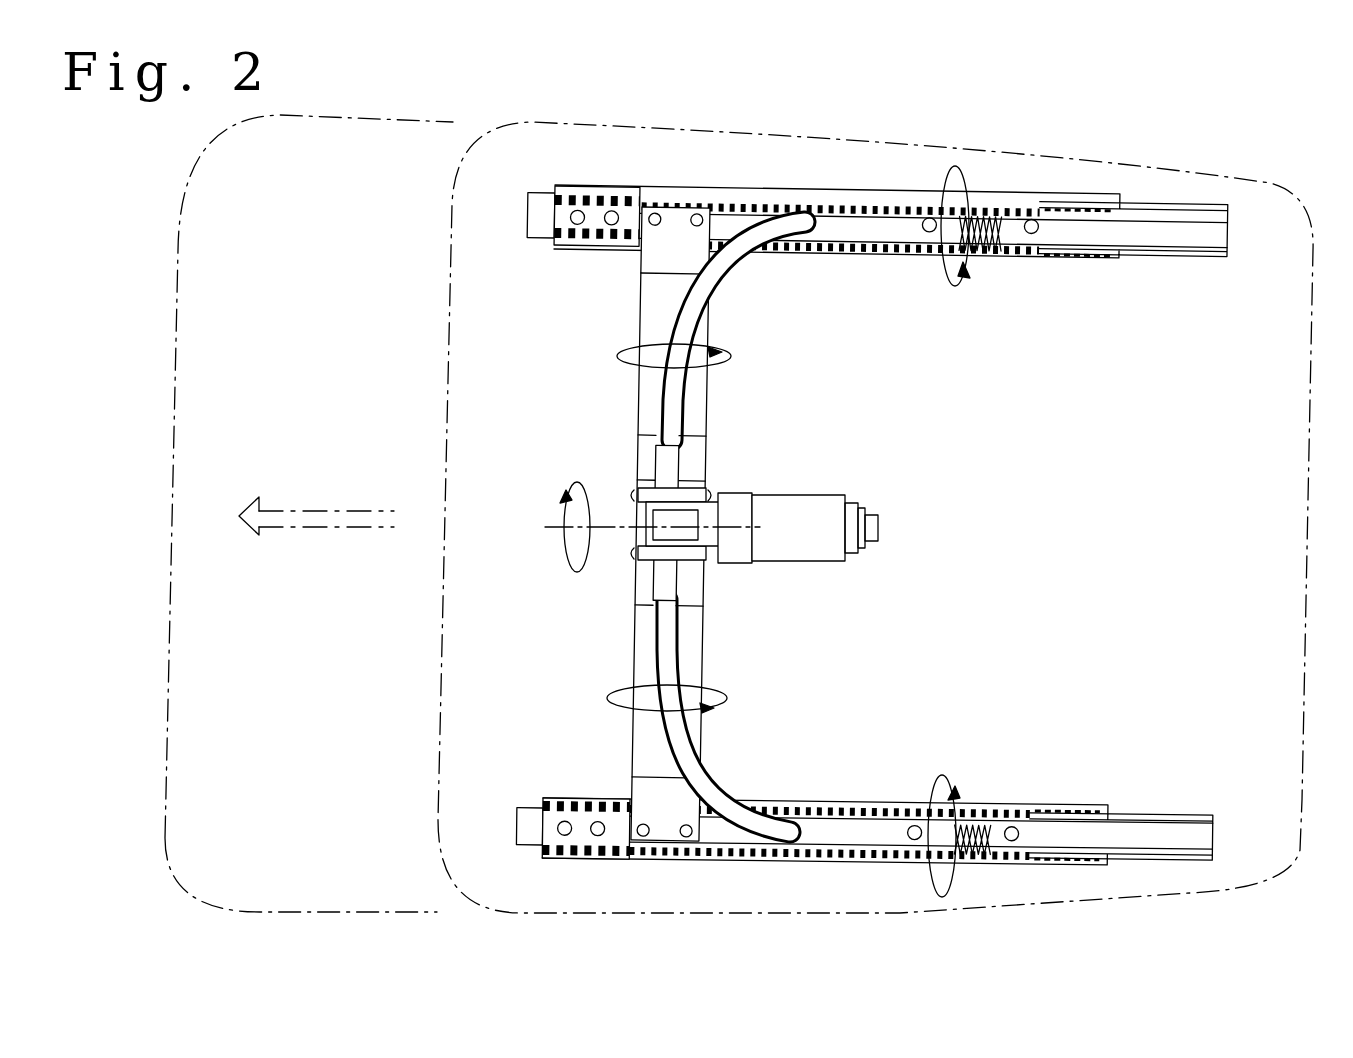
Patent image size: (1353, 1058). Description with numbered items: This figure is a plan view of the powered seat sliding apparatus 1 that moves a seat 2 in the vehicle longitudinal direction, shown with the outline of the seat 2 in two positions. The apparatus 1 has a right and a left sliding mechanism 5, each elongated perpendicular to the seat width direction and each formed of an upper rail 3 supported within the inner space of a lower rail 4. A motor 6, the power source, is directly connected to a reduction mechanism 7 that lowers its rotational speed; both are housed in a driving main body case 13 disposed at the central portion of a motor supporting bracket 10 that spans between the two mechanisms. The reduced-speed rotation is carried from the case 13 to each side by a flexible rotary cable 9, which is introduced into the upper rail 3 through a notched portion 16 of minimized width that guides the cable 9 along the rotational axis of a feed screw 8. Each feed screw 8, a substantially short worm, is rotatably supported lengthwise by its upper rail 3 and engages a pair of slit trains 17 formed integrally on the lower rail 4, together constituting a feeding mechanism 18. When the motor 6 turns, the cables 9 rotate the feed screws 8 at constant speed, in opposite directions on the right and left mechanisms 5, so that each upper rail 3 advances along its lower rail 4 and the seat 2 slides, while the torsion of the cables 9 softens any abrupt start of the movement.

The powered seat sliding apparatus 1 is at (495, 704).
The seat 2 is at (174, 303).
The upper rail 3 is at (1203, 260).
The lower rail 4 is at (1070, 262).
The sliding mechanism 5 is at (1160, 328).
The motor 6 is at (810, 500).
The reduction mechanism 7 is at (711, 530).
The feed screw 8 is at (1021, 252).
The rotary cable 9 is at (682, 421).
The motor supporting bracket 10 is at (642, 308).
The driving main body case 13 is at (638, 570).
The notched portion 16 is at (797, 226).
The slit train 17 is at (603, 200).
The feeding mechanism 18 is at (990, 266).